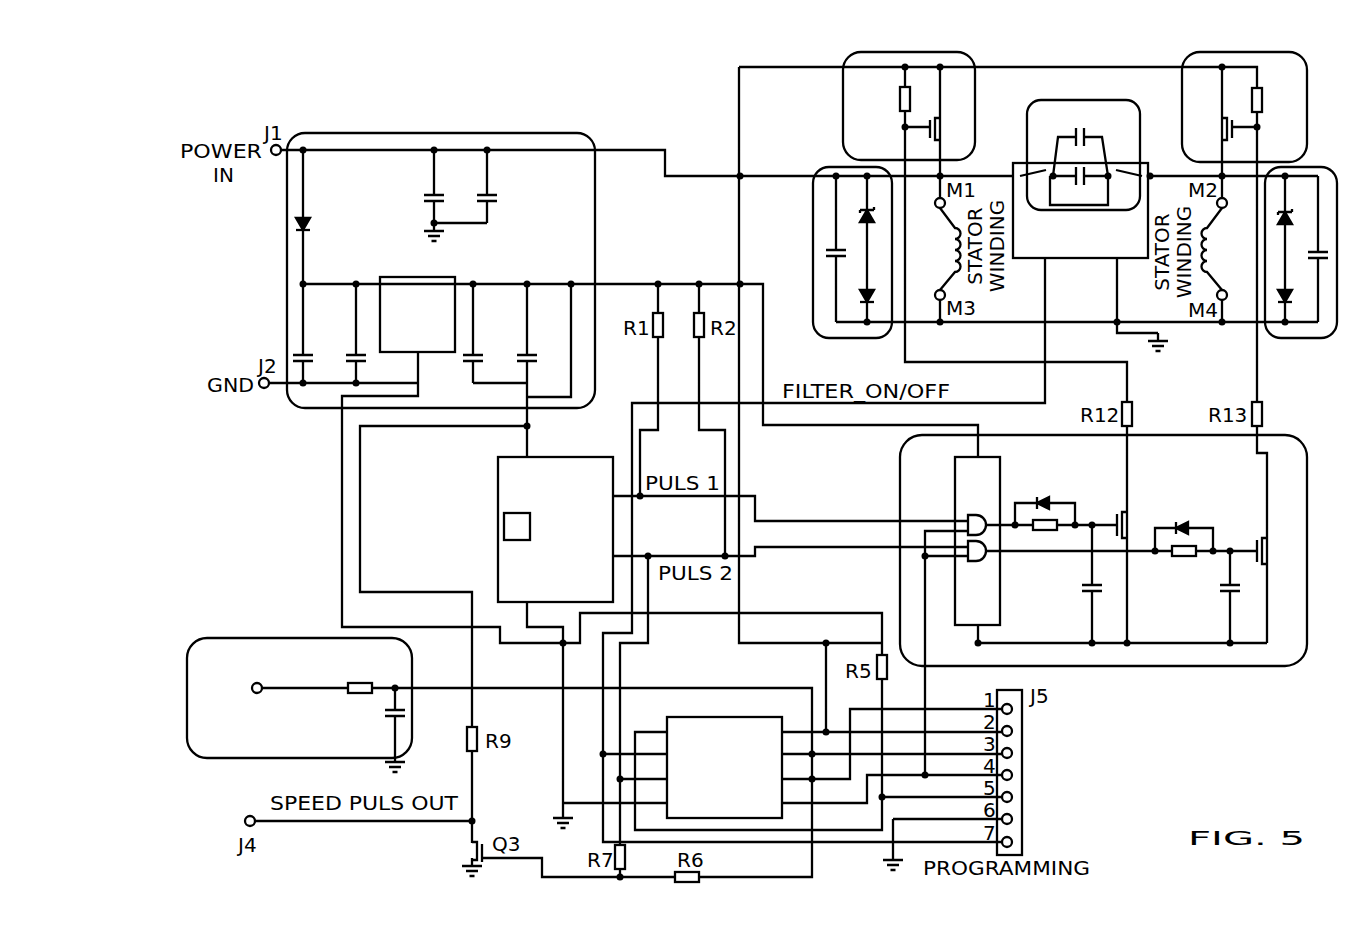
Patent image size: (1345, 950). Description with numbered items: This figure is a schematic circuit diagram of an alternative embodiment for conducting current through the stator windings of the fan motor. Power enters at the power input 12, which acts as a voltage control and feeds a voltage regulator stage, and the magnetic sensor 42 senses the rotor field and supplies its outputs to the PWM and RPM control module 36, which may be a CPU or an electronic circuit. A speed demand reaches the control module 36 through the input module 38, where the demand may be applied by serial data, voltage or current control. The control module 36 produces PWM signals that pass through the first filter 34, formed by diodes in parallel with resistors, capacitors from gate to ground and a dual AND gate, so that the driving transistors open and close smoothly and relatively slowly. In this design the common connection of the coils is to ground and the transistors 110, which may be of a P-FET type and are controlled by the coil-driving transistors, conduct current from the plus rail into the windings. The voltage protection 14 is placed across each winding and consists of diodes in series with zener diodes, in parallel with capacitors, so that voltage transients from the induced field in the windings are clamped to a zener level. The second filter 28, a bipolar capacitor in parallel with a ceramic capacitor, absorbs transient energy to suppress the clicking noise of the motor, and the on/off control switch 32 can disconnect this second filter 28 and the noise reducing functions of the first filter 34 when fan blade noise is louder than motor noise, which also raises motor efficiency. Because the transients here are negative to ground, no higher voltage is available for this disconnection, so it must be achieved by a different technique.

The power input 12 is at (425, 295).
The voltage protection 14 is at (1061, 255).
The second filter 28 is at (1063, 145).
The on/off control switch 32 is at (1080, 240).
The first filter 34 is at (1103, 575).
The PWM and RPM control module 36 is at (758, 785).
The input module 38 is at (299, 669).
The magnetic sensor 42 is at (492, 516).
The transistors 110 is at (1075, 88).